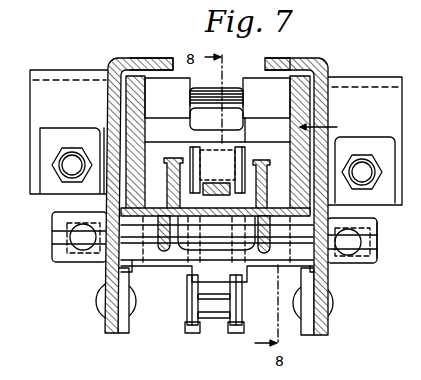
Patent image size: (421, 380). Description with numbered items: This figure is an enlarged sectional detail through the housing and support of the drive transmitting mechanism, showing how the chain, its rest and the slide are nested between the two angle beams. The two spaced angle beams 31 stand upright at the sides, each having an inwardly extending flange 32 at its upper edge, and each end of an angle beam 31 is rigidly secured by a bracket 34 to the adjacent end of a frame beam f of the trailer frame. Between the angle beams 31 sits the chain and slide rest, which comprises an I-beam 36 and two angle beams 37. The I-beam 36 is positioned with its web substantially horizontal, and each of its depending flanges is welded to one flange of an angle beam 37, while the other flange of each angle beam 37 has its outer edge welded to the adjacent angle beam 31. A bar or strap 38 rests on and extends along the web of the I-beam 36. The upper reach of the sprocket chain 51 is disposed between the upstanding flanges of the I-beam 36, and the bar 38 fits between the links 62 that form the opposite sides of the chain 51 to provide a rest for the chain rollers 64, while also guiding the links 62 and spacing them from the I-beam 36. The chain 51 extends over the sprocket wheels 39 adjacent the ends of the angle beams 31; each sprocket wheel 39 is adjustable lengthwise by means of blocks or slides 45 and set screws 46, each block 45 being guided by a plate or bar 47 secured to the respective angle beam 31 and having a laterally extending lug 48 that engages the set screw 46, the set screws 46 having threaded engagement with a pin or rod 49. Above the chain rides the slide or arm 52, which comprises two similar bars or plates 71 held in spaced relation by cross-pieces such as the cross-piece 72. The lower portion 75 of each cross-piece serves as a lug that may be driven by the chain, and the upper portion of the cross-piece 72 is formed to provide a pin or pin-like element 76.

The frame beam f is at (66, 75).
The angle beam 31 is at (108, 110).
The inwardly extending flange 32 is at (160, 57).
The bracket 34 is at (57, 136).
The I-beam 36 is at (172, 180).
The angle beam 37 is at (173, 200).
The bar or strap 38 is at (192, 167).
The sprocket wheel 39 is at (190, 268).
The block or slide 45 is at (133, 268).
The set screw 46 is at (84, 248).
The plate or bar 47 is at (125, 322).
The lug 48 is at (55, 219).
The pin or rod 49 is at (376, 223).
The sprocket chain 51 is at (243, 290).
The slide or arm 52 is at (328, 126).
The chain link 62 is at (186, 316).
The chain roller 64 is at (210, 158).
The bar or plate 71 is at (140, 102).
The cross-piece 72 is at (266, 98).
The lower portion of cross-piece 75 is at (260, 130).
The pin or pin-like element 76 is at (230, 92).